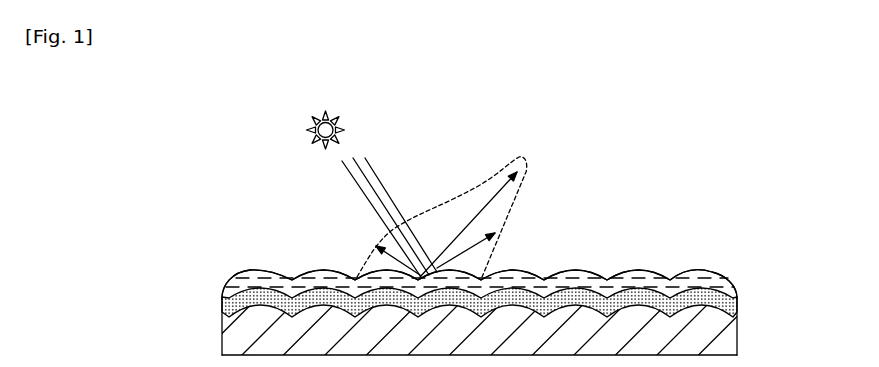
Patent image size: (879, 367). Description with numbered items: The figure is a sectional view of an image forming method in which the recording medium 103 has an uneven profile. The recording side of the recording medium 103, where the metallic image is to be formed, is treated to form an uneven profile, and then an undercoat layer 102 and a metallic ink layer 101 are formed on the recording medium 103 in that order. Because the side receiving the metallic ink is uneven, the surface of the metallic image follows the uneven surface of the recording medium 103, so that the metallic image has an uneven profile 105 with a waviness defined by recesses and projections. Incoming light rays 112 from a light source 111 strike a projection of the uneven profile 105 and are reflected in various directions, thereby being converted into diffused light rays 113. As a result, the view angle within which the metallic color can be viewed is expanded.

The metallic ink layer 101 is at (710, 283).
The undercoat layer 102 is at (737, 298).
The recording medium 103 is at (725, 343).
The uneven profile 105 is at (252, 268).
The light source 111 is at (318, 113).
The incoming light rays 112 is at (386, 198).
The diffused light rays 113 is at (527, 200).